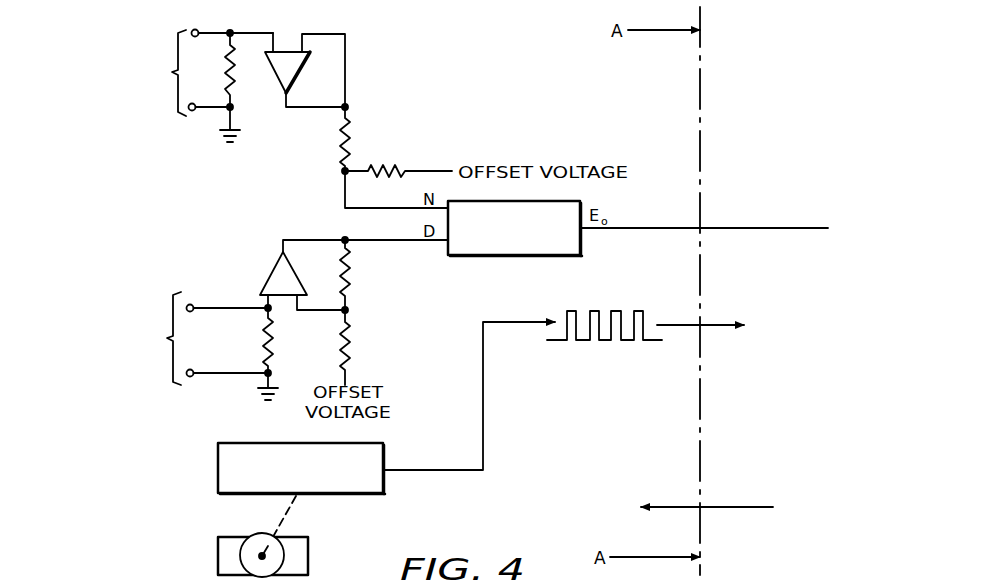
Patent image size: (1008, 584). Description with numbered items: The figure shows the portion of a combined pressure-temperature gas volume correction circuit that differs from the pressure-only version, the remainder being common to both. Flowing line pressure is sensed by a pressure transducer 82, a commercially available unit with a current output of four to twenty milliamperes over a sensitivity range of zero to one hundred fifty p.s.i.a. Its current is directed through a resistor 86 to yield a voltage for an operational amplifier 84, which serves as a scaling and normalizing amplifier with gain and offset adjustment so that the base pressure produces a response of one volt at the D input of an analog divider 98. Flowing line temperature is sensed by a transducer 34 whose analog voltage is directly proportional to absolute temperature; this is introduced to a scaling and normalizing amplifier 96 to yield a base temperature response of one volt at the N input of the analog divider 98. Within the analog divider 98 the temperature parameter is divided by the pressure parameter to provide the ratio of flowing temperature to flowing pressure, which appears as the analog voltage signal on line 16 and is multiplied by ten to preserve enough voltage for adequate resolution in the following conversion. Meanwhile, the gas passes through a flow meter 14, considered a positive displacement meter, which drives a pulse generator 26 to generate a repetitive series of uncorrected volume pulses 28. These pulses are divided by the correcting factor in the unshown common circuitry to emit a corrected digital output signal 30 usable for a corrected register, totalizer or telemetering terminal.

The meter 14 is at (311, 545).
The analog voltage signal 16 is at (640, 228).
The pulse generator 26 is at (216, 478).
The pulses 28 is at (484, 412).
The digital output signal 30 is at (678, 509).
The transducer 34 is at (152, 155).
The pressure transducer 82 is at (141, 442).
The operational amplifier 84 is at (275, 270).
The resistor 86 is at (271, 340).
The scaling and normalizing amplifier 96 is at (283, 77).
The analog divider 98 is at (470, 255).